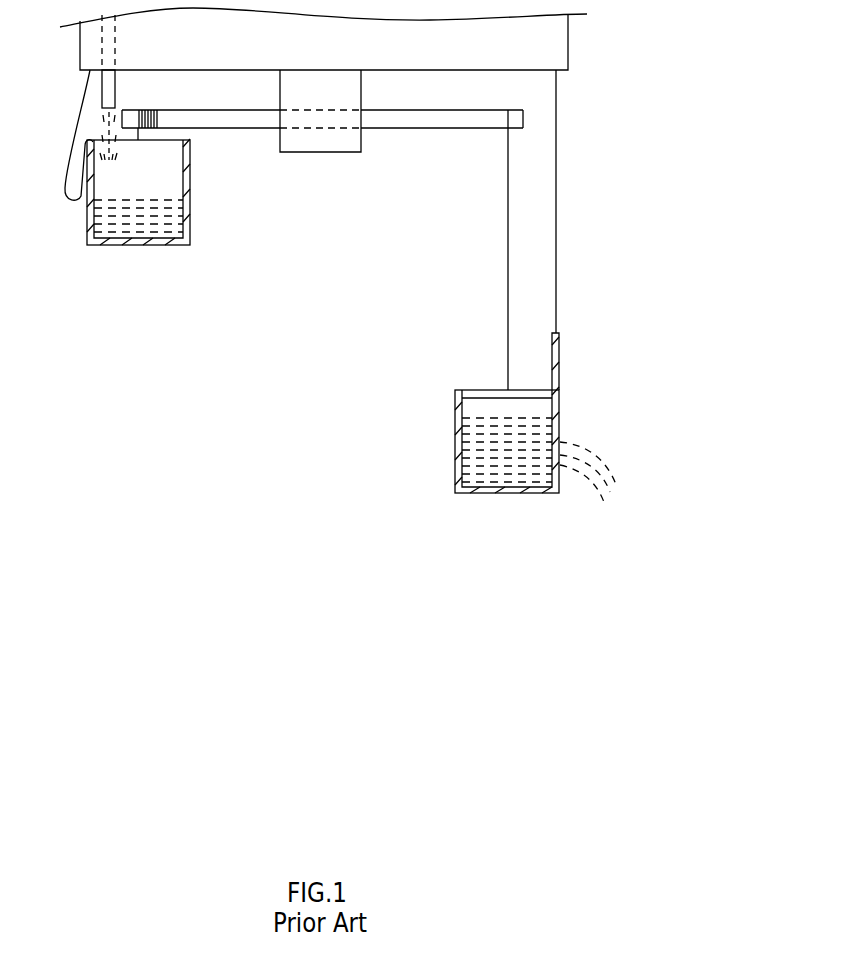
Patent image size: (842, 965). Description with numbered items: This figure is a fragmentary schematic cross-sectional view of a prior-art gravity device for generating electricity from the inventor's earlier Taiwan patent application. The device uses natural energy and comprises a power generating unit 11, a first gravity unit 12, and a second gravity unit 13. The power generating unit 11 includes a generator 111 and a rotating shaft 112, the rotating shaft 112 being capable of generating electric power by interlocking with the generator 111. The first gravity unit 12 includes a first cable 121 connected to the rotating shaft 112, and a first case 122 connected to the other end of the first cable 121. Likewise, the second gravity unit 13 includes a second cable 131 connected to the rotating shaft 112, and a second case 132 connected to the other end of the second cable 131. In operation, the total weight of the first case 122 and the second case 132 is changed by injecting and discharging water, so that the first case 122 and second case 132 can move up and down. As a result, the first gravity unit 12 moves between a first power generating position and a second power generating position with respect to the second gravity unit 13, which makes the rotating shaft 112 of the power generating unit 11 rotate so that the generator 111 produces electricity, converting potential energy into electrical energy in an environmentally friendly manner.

The power generating unit 11 is at (322, 161).
The generator 111 is at (336, 135).
The rotating shaft 112 is at (475, 128).
The first gravity unit 12 is at (165, 167).
The first cable 121 is at (160, 115).
The first case 122 is at (190, 208).
The second gravity unit 13 is at (514, 287).
The second cable 131 is at (508, 310).
The second case 132 is at (455, 457).